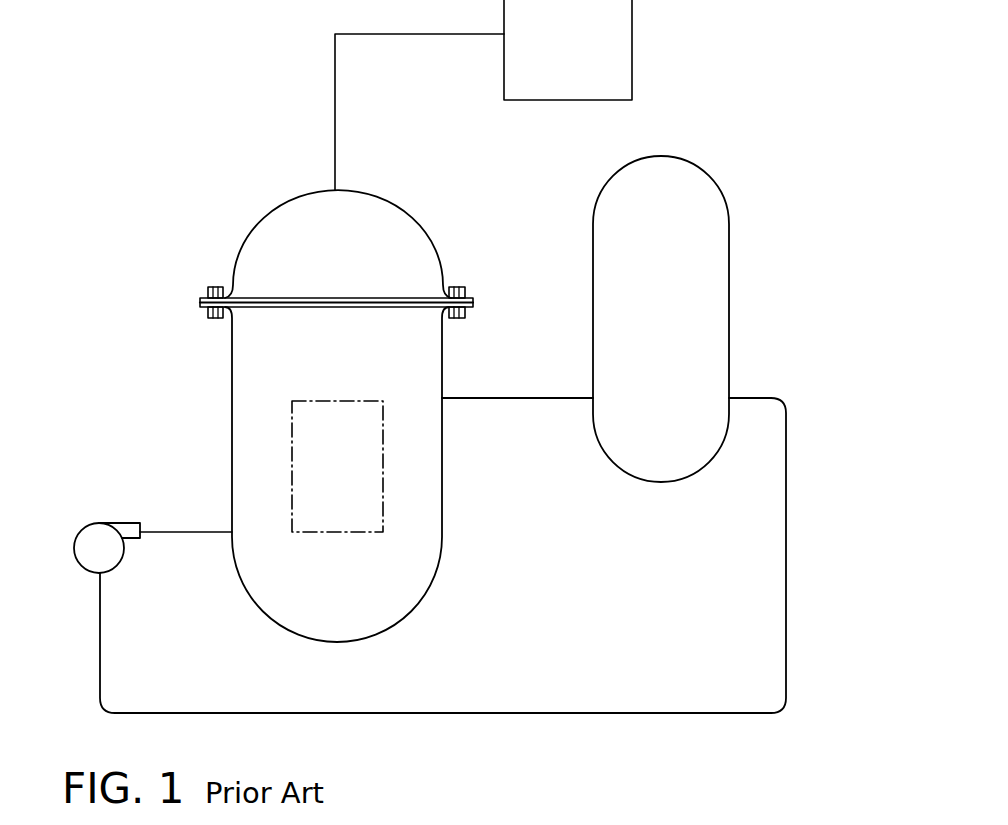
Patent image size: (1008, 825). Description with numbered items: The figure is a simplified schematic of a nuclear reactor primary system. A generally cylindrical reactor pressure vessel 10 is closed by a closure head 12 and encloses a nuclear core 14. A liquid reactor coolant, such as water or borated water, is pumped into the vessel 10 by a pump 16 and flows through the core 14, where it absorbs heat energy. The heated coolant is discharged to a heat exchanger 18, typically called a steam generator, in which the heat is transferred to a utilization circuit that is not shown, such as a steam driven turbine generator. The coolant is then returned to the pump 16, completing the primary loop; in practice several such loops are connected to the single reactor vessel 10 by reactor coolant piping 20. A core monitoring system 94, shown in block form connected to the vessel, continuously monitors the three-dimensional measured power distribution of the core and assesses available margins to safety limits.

The reactor pressure vessel 10 is at (323, 476).
The closure head 12 is at (245, 245).
The nuclear core 14 is at (292, 453).
The pump 16 is at (96, 523).
The heat exchanger 18 is at (732, 258).
The reactor coolant piping 20 is at (787, 645).
The core monitoring system 94 is at (551, 49).